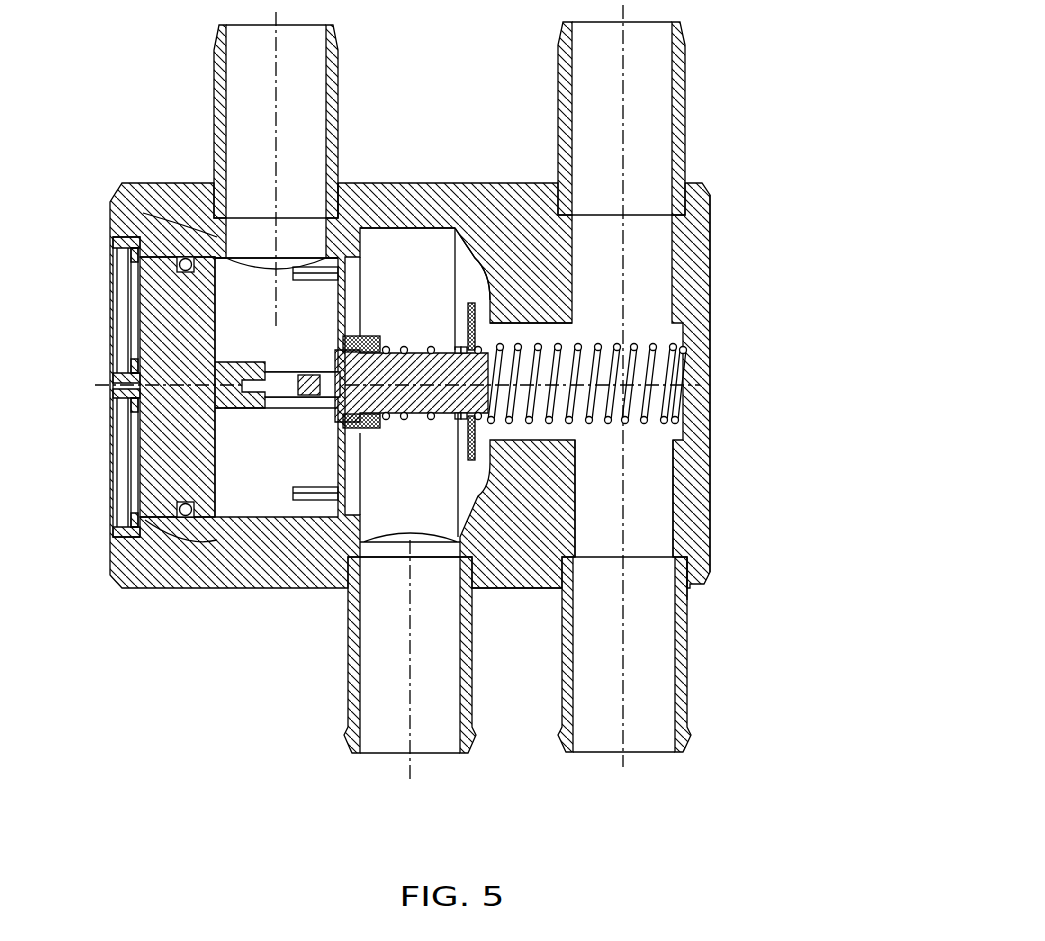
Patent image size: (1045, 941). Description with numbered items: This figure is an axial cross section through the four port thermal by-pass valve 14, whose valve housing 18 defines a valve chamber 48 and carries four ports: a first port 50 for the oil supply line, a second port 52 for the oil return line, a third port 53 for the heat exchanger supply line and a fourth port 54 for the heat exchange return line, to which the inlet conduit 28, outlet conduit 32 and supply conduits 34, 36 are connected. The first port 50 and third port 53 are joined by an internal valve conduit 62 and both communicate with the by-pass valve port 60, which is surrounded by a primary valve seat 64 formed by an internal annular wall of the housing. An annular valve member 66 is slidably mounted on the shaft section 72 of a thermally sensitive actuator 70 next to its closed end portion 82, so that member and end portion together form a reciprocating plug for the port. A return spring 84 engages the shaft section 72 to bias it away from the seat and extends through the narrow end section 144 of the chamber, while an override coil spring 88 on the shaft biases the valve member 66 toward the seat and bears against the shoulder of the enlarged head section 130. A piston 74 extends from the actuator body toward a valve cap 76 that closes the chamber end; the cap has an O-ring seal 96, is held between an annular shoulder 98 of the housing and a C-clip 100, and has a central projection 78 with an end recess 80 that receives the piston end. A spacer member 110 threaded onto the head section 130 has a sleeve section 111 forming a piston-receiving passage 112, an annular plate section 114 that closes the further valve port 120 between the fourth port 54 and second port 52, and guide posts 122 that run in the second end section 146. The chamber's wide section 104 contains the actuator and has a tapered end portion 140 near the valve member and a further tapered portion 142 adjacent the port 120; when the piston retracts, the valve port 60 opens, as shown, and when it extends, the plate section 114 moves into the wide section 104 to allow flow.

The by-pass valve 14 is at (409, 392).
The valve housing 18 is at (683, 213).
The inlet conduit 28 is at (655, 60).
The outlet conduit 32 is at (338, 77).
The supply conduit 34 is at (433, 663).
The supply conduit 36 is at (690, 660).
The valve chamber 48 is at (366, 267).
The first port 50 is at (686, 610).
The second port 52 is at (368, 600).
The third port 53 is at (648, 200).
The fourth port 54 is at (257, 215).
The by-pass valve port 60 is at (500, 433).
The internal valve conduit 62 is at (647, 282).
The primary valve seat 64 is at (473, 255).
The valve member 66 is at (468, 432).
The thermally sensitive actuator 70 is at (422, 365).
The shaft section 72 is at (402, 418).
The piston 74 is at (312, 372).
The valve cap 76 is at (140, 448).
The central projection 78 is at (228, 408).
The end recess 80 is at (248, 363).
The closed end portion 82 is at (490, 445).
The return spring 84 is at (650, 367).
The override coil spring 88 is at (408, 418).
The O-ring seal 96 is at (243, 518).
The annular shoulder 98 is at (113, 558).
The C-clip 100 is at (113, 238).
The wide section 104 is at (406, 267).
The spacer member 110 is at (300, 398).
The sleeve section 111 is at (292, 373).
The piston-receiving passage 112 is at (282, 395).
The annular plate section 114 is at (348, 305).
The further valve port 120 is at (343, 258).
The guide posts 122 is at (320, 487).
The enlarged head section 130 is at (340, 318).
The tapered end portion 140 is at (490, 588).
The tapered portion 142 is at (405, 542).
The narrow end section 144 is at (540, 330).
The second end section 146 is at (143, 213).